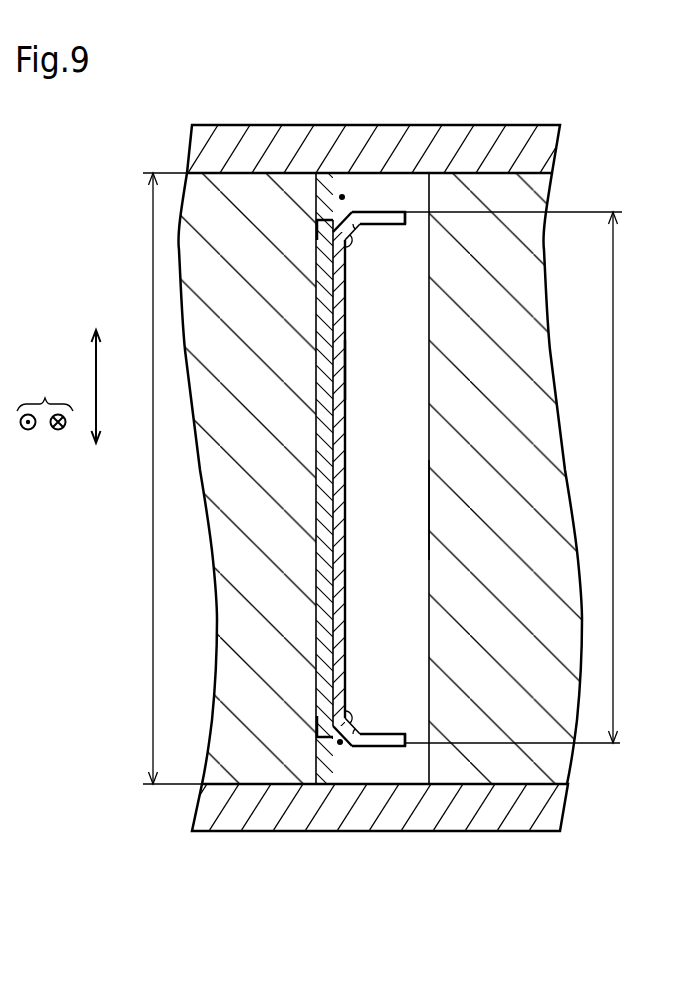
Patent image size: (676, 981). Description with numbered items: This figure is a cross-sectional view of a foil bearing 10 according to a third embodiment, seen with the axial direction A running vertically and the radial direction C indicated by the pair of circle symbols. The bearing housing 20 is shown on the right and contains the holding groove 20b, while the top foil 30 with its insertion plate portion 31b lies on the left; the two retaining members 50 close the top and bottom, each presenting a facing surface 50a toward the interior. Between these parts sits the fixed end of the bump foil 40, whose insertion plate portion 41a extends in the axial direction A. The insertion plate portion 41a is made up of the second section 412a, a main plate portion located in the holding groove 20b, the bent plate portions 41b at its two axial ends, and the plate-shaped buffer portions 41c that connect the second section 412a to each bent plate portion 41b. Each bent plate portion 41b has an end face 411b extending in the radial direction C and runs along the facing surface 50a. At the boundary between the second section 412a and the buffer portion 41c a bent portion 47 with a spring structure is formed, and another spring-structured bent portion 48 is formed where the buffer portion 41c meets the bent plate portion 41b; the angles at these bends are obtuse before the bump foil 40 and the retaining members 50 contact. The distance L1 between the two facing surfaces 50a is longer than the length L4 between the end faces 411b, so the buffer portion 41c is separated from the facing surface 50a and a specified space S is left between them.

The foil bearing 10 is at (178, 106).
The bearing housing 20 is at (543, 185).
The holding groove 20b is at (430, 505).
The top foil 30 is at (312, 454).
The insertion plate portion 31b is at (320, 490).
The bump foil 40 is at (346, 433).
The insertion plate portion 41a is at (390, 354).
The bent plate portion 41b is at (400, 212).
The end face 411b is at (378, 212).
The second section 412a is at (347, 375).
The buffer portion 41c is at (352, 214).
The bent portion 47 is at (322, 232).
The bent portion 48 is at (362, 197).
The retaining member 50 is at (268, 125).
The facing surface 50a is at (352, 176).
The space S is at (342, 197).
The distance L1 is at (181, 478).
The length L4 is at (527, 477).
The axial direction A is at (94, 366).
The radial direction C is at (45, 400).